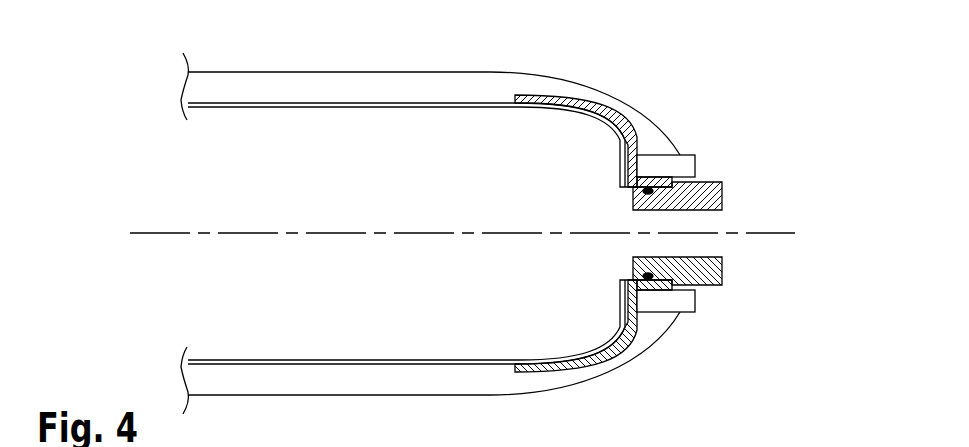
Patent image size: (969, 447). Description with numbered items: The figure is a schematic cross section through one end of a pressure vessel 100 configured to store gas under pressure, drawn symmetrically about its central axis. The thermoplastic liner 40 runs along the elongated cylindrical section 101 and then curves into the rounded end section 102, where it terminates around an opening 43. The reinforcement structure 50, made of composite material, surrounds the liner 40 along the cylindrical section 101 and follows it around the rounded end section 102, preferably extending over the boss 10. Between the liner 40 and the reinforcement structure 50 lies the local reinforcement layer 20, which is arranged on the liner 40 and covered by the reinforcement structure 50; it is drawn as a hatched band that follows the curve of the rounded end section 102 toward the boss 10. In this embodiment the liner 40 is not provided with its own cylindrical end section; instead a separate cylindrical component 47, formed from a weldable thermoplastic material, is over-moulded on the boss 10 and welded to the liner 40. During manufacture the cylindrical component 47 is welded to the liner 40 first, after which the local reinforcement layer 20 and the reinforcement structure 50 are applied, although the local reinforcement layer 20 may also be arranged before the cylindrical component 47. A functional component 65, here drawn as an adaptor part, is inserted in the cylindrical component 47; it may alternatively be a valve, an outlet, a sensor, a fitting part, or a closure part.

The boss 10 is at (657, 157).
The local reinforcement layer 20 is at (558, 100).
The thermoplastic liner 40 is at (261, 103).
The opening 43 is at (660, 246).
The cylindrical component 47 is at (623, 128).
The reinforcement structure 50 is at (489, 81).
The functional component 65 is at (725, 182).
The pressure vessel 100 is at (688, 98).
The elongated cylindrical section 101 is at (402, 395).
The rounded end section 102 is at (625, 92).